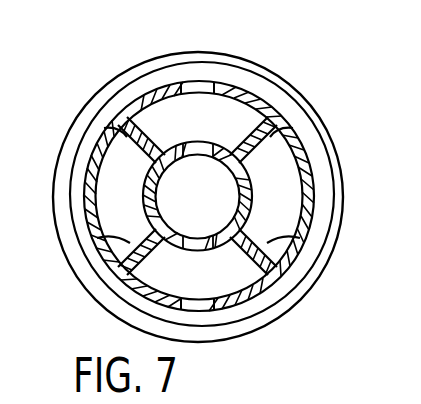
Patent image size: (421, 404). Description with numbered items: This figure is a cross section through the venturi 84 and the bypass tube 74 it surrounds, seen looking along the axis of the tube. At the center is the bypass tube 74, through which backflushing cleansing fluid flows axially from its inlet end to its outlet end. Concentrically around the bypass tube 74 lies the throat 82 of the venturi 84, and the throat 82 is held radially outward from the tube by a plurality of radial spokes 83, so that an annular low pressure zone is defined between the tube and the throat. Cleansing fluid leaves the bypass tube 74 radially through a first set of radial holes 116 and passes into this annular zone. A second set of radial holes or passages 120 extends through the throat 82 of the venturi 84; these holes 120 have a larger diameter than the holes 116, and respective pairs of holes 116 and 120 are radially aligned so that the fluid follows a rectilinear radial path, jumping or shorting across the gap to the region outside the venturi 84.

The bypass tube 74 is at (157, 226).
The throat 82 is at (84, 212).
The radial spokes 83 is at (294, 129).
The venturi 84 is at (98, 96).
The radial holes 116 is at (203, 144).
The radial holes or passages 120 is at (208, 83).